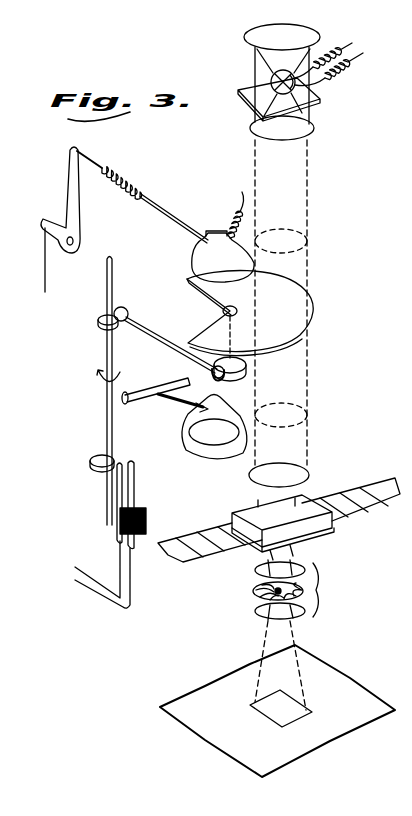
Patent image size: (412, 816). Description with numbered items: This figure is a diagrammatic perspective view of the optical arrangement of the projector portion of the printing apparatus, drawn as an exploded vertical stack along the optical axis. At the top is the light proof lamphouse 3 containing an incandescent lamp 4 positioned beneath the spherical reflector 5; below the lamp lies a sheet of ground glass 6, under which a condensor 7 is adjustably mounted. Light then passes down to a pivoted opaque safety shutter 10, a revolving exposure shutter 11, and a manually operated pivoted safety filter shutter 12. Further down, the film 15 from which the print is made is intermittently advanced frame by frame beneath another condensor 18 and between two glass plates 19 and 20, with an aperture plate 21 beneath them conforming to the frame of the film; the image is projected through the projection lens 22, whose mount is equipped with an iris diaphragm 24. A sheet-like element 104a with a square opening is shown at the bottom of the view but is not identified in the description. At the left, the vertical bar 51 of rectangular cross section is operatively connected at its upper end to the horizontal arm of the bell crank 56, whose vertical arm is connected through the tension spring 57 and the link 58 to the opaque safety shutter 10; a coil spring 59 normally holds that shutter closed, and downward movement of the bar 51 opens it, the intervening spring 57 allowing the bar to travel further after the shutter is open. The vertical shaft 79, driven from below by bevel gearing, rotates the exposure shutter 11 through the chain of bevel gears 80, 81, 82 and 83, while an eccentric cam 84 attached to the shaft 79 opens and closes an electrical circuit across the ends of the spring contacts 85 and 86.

The lamphouse 3 is at (230, 28).
The incandescent lamp 4 is at (270, 77).
The spherical reflector 5 is at (304, 31).
The sheet of ground glass 6 is at (322, 99).
The condensor 7 is at (314, 128).
The pivoted opaque safety shutter 10 is at (214, 234).
The revolving exposure shutter 11 is at (308, 318).
The pivoted safety filter shutter 12 is at (214, 455).
The film 15 is at (392, 480).
The condensor 18 is at (311, 470).
The glass plate 19 is at (334, 512).
The glass plate 20 is at (334, 527).
The aperture plate 21 is at (300, 548).
The projection lens 22 is at (303, 590).
The iris diaphragm 24 is at (254, 591).
The vertical bar 51 is at (42, 242).
The bell crank 56 is at (68, 182).
The tension spring 57 is at (127, 185).
The link 58 is at (163, 210).
The coil spring 59 is at (231, 206).
The vertical shaft 79 is at (106, 394).
The bevel gear 80 is at (100, 323).
The bevel gear 81 is at (127, 310).
The bevel gear 82 is at (212, 372).
The bevel gear 83 is at (246, 380).
The eccentric cam 84 is at (90, 462).
The spring contact 85 is at (124, 464).
The spring contact 86 is at (136, 480).
The record sheet 104a is at (340, 674).